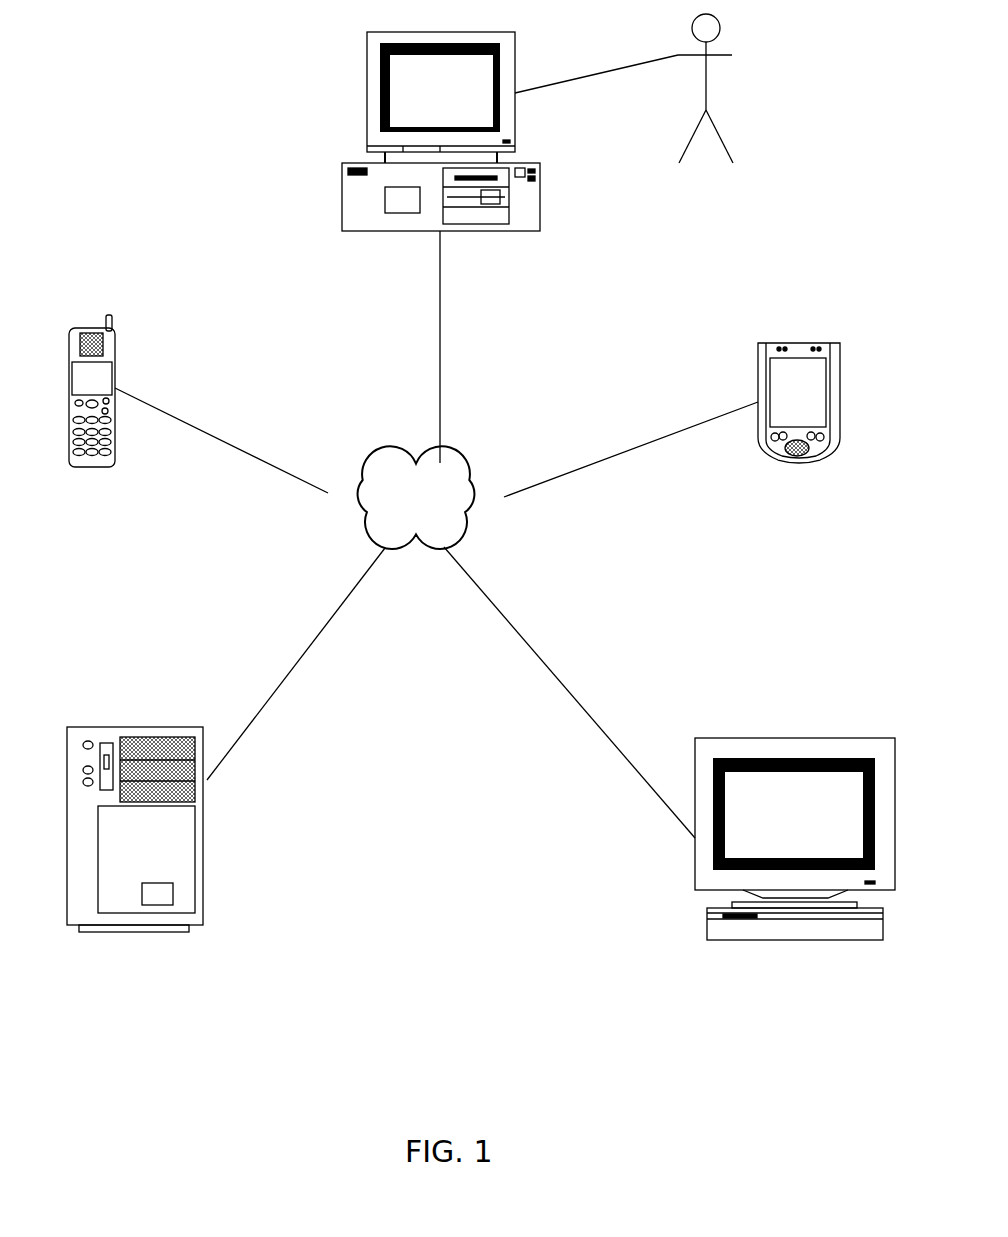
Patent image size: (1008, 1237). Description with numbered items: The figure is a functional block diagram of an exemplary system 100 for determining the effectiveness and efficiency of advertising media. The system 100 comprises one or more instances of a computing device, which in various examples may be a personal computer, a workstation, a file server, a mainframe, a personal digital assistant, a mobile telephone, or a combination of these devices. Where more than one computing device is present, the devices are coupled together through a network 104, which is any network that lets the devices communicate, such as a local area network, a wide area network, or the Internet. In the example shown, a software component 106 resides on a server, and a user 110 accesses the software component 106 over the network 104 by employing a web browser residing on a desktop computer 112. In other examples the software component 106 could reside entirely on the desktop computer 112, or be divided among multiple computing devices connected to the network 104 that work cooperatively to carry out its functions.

The system 100 is at (208, 24).
The network 104 is at (389, 449).
The software component 106 is at (152, 894).
The user 110 is at (706, 89).
The desktop computer 112 is at (509, 231).